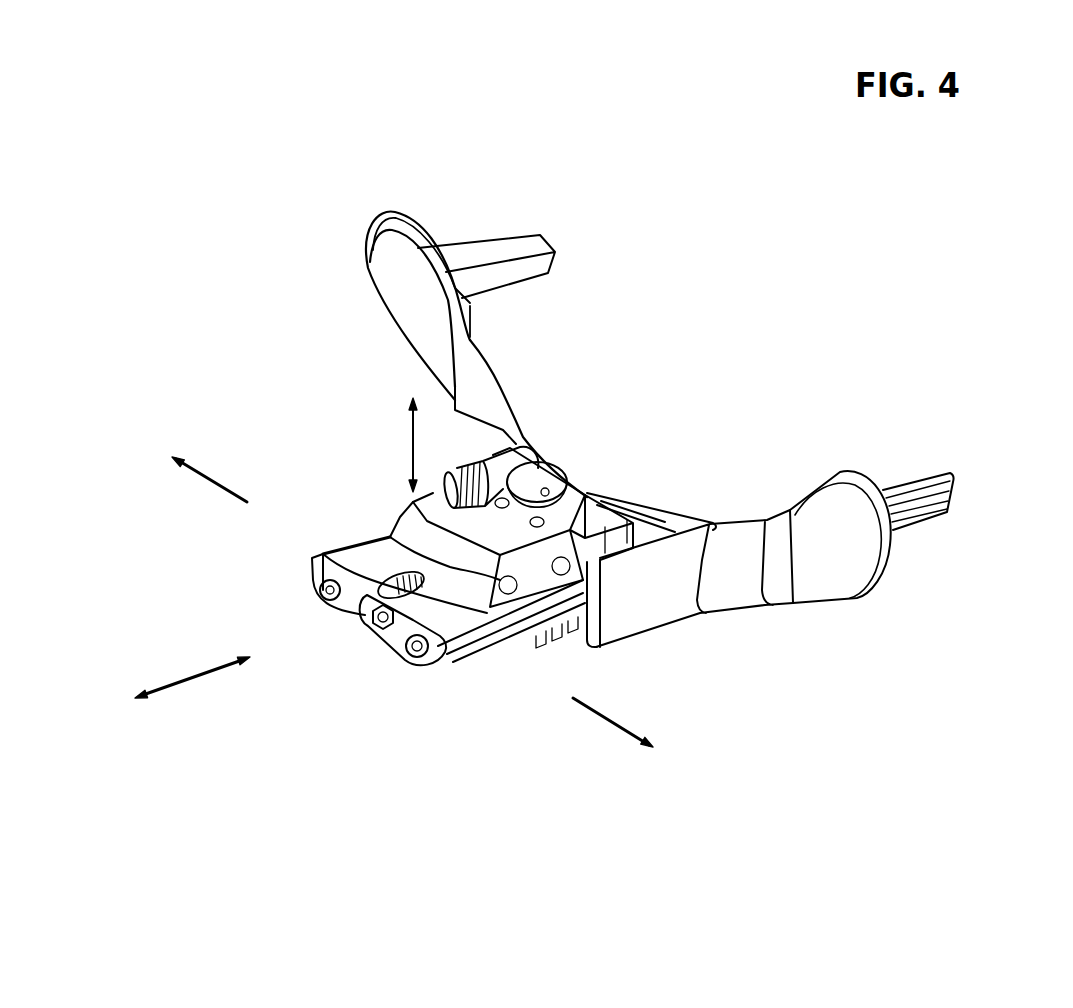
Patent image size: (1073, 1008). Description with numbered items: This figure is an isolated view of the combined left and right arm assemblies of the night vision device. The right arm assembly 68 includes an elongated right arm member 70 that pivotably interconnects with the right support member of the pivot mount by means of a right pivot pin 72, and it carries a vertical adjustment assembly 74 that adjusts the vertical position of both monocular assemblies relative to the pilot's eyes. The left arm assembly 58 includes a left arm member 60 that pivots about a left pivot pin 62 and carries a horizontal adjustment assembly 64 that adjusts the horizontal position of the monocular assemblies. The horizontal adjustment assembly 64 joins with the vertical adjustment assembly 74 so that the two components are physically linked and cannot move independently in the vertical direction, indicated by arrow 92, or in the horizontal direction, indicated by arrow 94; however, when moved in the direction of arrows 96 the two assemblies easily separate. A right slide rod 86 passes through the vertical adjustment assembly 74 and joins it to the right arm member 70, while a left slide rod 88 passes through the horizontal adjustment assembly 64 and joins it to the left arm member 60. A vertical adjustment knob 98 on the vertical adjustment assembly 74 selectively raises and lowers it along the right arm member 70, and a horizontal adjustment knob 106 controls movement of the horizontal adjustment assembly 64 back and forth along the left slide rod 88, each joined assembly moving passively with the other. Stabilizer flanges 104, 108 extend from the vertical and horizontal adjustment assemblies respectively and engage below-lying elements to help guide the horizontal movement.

The left arm assembly 58 is at (623, 497).
The left arm member 60 is at (818, 590).
The left pivot pin 62 is at (955, 490).
The horizontal adjustment assembly 64 is at (378, 642).
The right arm assembly 68 is at (565, 462).
The right arm member 70 is at (398, 278).
The right pivot pin 72 is at (532, 240).
The vertical adjustment assembly 74 is at (370, 537).
The right slide rod 86 is at (320, 593).
The left slide rod 88 is at (407, 657).
The arrow 92 is at (410, 430).
The arrow 94 is at (213, 670).
The arrows 96 is at (213, 487).
The vertical adjustment knob 98 is at (447, 474).
The stabilizer flange 104 is at (310, 558).
The horizontal adjustment knob 106 is at (378, 600).
The stabilizer flange 108 is at (520, 643).